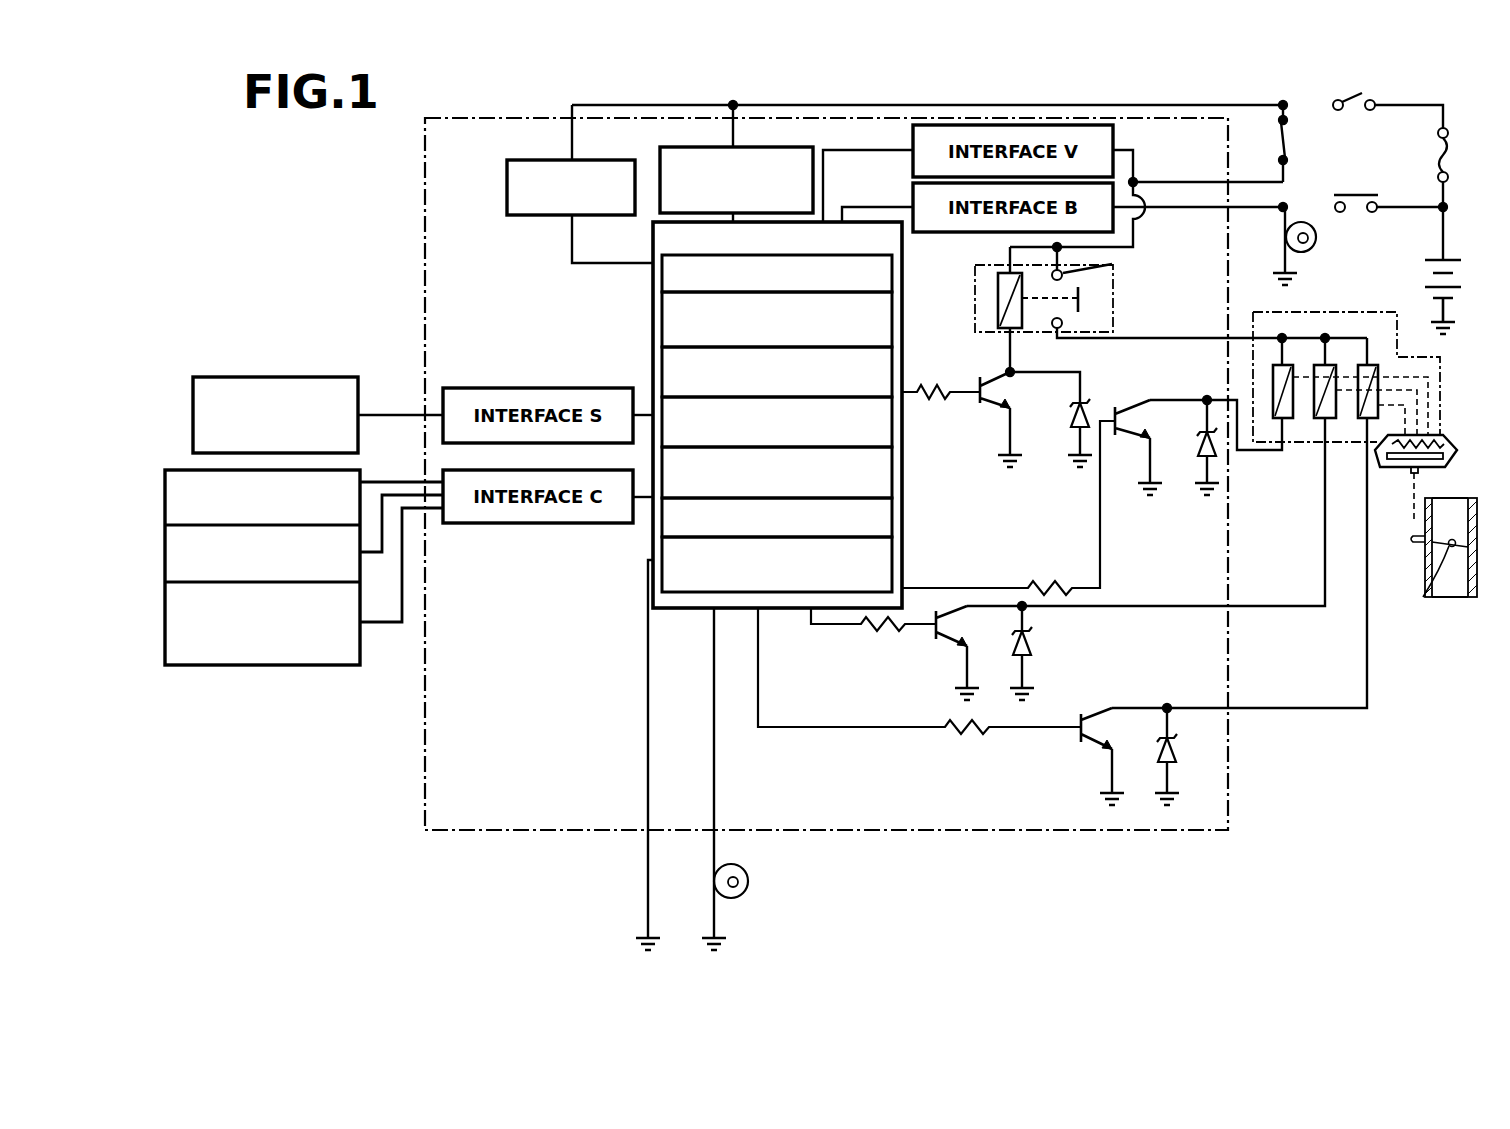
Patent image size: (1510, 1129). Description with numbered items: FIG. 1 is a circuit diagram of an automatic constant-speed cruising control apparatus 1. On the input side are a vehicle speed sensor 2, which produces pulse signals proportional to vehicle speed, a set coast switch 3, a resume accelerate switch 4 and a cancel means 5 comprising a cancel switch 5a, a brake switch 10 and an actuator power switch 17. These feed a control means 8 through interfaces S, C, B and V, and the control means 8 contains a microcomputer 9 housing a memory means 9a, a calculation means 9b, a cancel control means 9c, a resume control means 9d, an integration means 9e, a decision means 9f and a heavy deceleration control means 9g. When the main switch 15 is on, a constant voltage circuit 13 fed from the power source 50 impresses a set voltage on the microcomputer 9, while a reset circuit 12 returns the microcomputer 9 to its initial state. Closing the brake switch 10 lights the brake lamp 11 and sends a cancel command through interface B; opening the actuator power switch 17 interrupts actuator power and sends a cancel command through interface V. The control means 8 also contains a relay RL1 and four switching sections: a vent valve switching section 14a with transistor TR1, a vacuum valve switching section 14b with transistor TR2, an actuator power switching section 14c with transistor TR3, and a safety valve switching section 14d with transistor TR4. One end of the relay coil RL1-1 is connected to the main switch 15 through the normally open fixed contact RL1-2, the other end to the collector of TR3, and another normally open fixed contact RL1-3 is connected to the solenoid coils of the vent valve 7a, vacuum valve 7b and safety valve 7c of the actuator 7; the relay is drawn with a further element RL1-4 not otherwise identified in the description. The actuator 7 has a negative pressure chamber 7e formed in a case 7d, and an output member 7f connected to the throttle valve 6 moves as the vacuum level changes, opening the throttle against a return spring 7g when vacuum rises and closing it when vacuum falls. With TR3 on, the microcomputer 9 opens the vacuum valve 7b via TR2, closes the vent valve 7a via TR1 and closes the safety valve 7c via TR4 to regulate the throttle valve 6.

The automatic constant-speed cruising control apparatus 1 is at (492, 96).
The vehicle speed sensor 2 is at (210, 377).
The set coast switch 3 is at (360, 565).
The resume accelerate switch 4 is at (362, 648).
The cancel means 5 is at (304, 548).
The cancel switch 5a is at (360, 472).
The throttle valve 6 is at (1424, 598).
The actuator 7 is at (1363, 401).
The vent valve 7a is at (1370, 365).
The vacuum valve 7b is at (1321, 365).
The safety valve 7c is at (1278, 365).
The case 7d is at (1450, 462).
The negative pressure chamber 7e is at (1442, 444).
The output member 7f is at (1450, 455).
The return spring 7g is at (1447, 435).
The control means 8 is at (872, 116).
The microcomputer 9 is at (790, 415).
The memory means 9a is at (903, 273).
The calculation means 9b is at (903, 328).
The cancel control means 9c is at (903, 378).
The resume control means 9d is at (903, 420).
The integration means 9e is at (903, 472).
The decision means 9f is at (903, 518).
The heavy deceleration control means 9g is at (903, 561).
The brake switch 10 is at (1355, 193).
The brake lamp 11 is at (1316, 239).
The reset circuit 12 is at (512, 162).
The constant voltage circuit 13 is at (668, 147).
The vent valve switching section 14a is at (1062, 611).
The vacuum valve switching section 14b is at (1068, 559).
The actuator power switching section 14c is at (997, 418).
The safety valve switching section 14d is at (1092, 481).
The main switch 15 is at (1356, 100).
The actuator power switch 17 is at (1278, 138).
The power source 50 is at (1460, 283).
The relay RL1 is at (1135, 308).
The relay coil RL1-1 is at (998, 290).
The normal opened-fixed contact RL1-2 is at (1113, 267).
The normal opened-fixed contact RL1-3 is at (1056, 333).
The relay armature RL1-4 is at (1083, 296).
The transistor TR1 is at (1115, 728).
The transistor TR2 is at (968, 626).
The transistor TR3 is at (1013, 390).
The transistor TR4 is at (1150, 419).